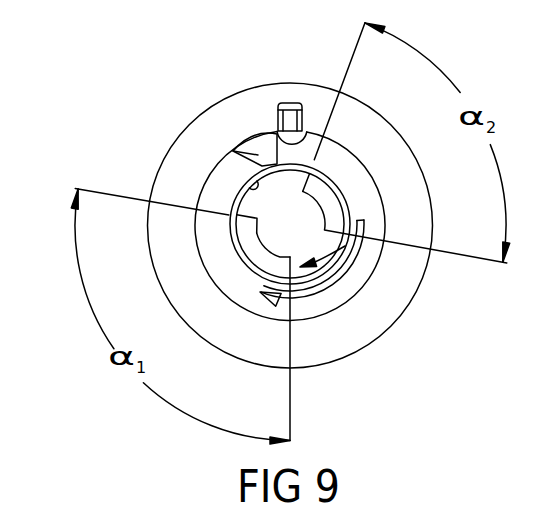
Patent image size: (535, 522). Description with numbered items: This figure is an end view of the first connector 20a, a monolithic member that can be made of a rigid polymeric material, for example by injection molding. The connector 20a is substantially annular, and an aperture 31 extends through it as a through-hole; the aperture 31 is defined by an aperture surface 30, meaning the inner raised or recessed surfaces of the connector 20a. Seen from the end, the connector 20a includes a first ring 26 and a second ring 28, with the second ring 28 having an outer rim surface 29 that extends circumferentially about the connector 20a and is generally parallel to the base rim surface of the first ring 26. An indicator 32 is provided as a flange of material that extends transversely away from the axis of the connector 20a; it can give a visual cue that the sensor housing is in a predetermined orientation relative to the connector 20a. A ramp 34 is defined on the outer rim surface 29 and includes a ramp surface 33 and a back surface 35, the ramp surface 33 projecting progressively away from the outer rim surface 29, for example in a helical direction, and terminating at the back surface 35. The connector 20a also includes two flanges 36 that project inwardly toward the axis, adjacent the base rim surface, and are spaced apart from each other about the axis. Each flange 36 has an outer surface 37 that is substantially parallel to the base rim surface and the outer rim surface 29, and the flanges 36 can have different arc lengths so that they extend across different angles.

The first connector 20a is at (366, 134).
The first ring 26 is at (164, 263).
The second ring 28 is at (362, 170).
The outer rim surface 29 is at (237, 274).
The aperture surface 30 is at (252, 172).
The aperture 31 is at (357, 257).
The indicator 32 is at (291, 103).
The ramp surface 33 is at (233, 151).
The ramp 34 is at (251, 130).
The back surface 35 is at (309, 128).
The flanges 36 is at (279, 262).
The outer surface 37 is at (233, 208).